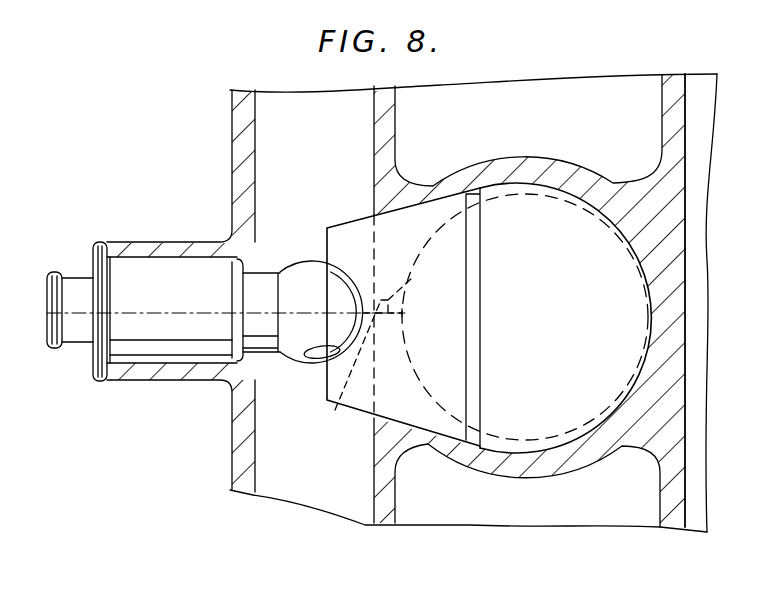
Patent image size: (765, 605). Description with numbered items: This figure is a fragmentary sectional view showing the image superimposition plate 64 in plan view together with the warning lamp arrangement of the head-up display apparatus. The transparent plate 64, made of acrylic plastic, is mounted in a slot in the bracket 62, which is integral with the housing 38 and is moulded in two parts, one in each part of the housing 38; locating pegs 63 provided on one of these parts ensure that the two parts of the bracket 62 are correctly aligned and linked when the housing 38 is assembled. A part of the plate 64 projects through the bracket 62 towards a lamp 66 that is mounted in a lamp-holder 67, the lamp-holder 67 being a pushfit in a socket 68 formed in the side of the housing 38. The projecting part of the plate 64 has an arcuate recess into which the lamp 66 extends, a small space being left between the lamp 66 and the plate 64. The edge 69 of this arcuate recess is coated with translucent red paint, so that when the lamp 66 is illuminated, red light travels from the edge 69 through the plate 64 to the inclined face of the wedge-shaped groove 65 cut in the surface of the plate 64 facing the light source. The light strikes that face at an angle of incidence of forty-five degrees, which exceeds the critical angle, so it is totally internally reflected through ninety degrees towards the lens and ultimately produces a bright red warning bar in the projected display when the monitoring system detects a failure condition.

The housing 38 is at (232, 445).
The bracket 62 is at (413, 513).
The locating pegs 63 is at (360, 360).
The transparent plate 64 is at (345, 226).
The wedge-shaped groove 65 is at (466, 193).
The lamp 66 is at (302, 268).
The lamp-holder 67 is at (148, 258).
The socket 68 is at (142, 378).
The edge of the arcuate recess 69 is at (308, 356).